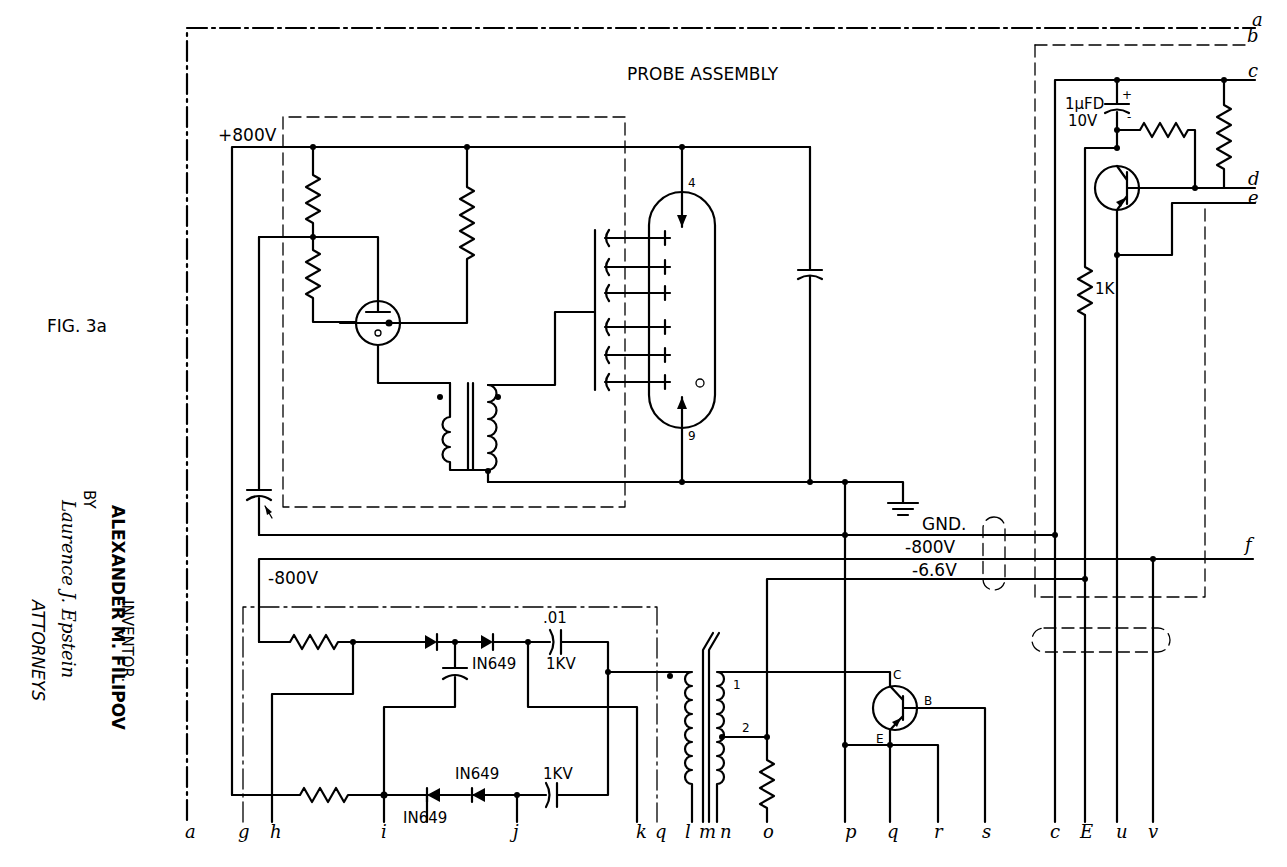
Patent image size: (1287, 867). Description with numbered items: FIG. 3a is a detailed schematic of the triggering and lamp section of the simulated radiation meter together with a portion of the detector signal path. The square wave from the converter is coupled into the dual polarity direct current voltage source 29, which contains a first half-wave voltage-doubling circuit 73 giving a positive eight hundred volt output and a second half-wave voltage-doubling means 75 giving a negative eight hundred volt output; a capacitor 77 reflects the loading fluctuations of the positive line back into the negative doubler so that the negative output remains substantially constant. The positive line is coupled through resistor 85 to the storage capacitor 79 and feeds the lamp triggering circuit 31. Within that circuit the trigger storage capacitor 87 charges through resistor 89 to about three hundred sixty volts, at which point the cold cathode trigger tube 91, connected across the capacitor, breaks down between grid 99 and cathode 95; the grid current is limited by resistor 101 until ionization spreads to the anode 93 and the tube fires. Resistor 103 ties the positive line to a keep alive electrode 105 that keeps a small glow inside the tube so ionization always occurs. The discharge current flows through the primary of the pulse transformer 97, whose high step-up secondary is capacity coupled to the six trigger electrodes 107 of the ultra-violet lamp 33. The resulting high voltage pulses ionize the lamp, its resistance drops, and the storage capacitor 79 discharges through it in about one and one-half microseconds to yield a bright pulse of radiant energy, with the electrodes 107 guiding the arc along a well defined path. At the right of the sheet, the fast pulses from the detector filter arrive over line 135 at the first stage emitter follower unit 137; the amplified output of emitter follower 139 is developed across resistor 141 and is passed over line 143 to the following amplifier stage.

The dual polarity direct current voltage source 29 is at (640, 622).
The lamp triggering circuit 31 is at (627, 492).
The ultra-violet lamp 33 is at (717, 313).
The first half-wave voltage-doubling circuit 73 is at (378, 786).
The second half-wave voltage-doubling means 75 is at (420, 636).
The capacitor 77 is at (450, 680).
The storage capacitor 79 is at (815, 268).
The resistor 85 is at (341, 800).
The trigger storage capacitor 87 is at (268, 488).
The resistor 89 is at (316, 182).
The cold cathode trigger tube 91 is at (401, 305).
The anode 93 is at (381, 317).
The cathode 95 is at (367, 355).
The pulse transformer 97 is at (467, 380).
The grid 99 is at (334, 336).
The resistor 101 is at (318, 268).
The resistor 103 is at (472, 202).
The keep alive electrode 105 is at (412, 319).
The trigger electrodes 107 is at (593, 222).
The line 135 is at (1229, 185).
The emitter follower unit 137 is at (1120, 257).
The emitter follower 139 is at (1135, 206).
The resistor 141 is at (1164, 136).
The line 143 is at (1036, 386).